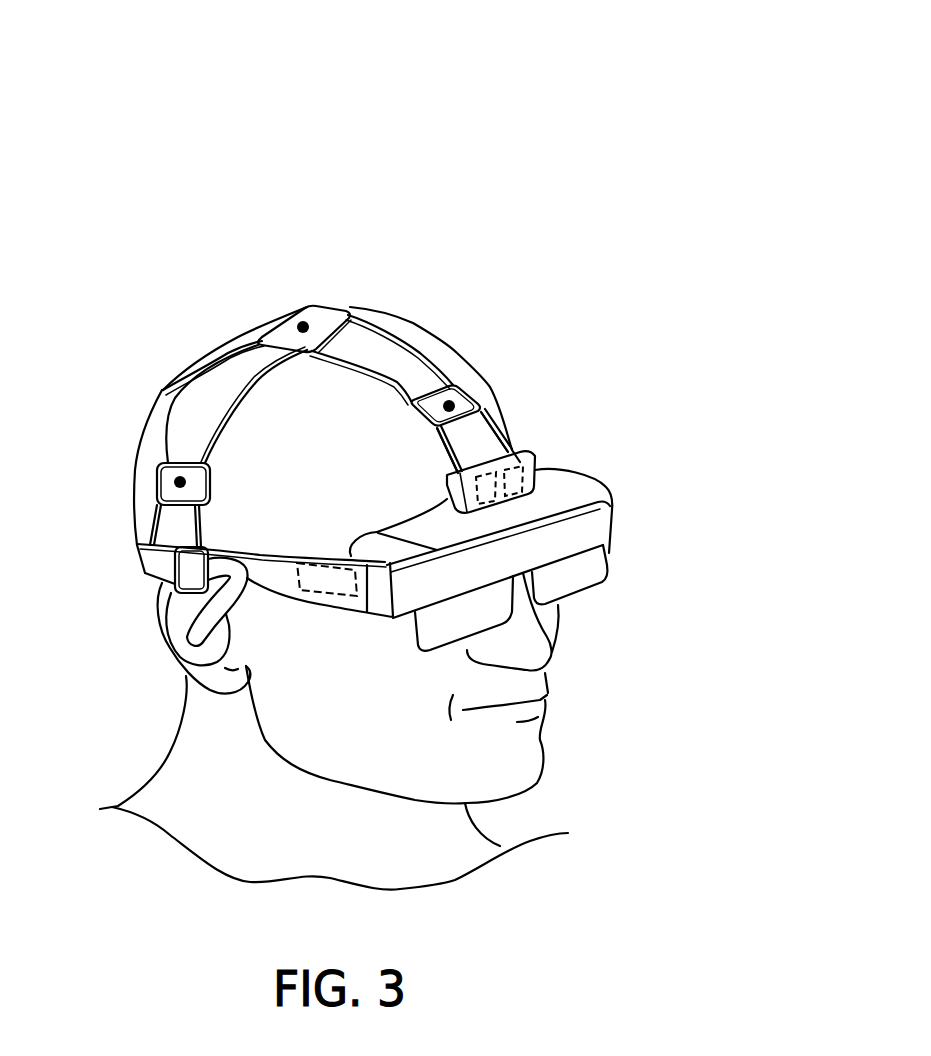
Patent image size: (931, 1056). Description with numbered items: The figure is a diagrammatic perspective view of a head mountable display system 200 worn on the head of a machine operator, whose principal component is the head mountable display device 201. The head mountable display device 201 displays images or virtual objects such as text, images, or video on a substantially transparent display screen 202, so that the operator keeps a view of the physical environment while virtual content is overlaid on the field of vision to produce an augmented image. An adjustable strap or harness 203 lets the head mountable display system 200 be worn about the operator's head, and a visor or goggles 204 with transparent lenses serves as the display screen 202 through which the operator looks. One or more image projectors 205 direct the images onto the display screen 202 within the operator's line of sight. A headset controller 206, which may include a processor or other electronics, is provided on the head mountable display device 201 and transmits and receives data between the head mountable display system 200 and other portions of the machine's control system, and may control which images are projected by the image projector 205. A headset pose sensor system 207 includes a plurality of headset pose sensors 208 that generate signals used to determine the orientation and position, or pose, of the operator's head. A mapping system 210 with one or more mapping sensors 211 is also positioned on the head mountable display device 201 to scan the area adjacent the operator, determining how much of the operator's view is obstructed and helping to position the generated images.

The head mountable display system 200 is at (425, 148).
The head mountable display device 201 is at (450, 280).
The display screen 202 is at (572, 572).
The adjustable strap or harness 203 is at (202, 358).
The visor or goggles 204 is at (567, 490).
The image projector 205 is at (333, 580).
The headset controller 206 is at (488, 465).
The headset pose sensor system 207 is at (345, 214).
The headset pose sensors 208 is at (449, 407).
The mapping system 210 is at (513, 440).
The mapping sensors 211 is at (540, 457).